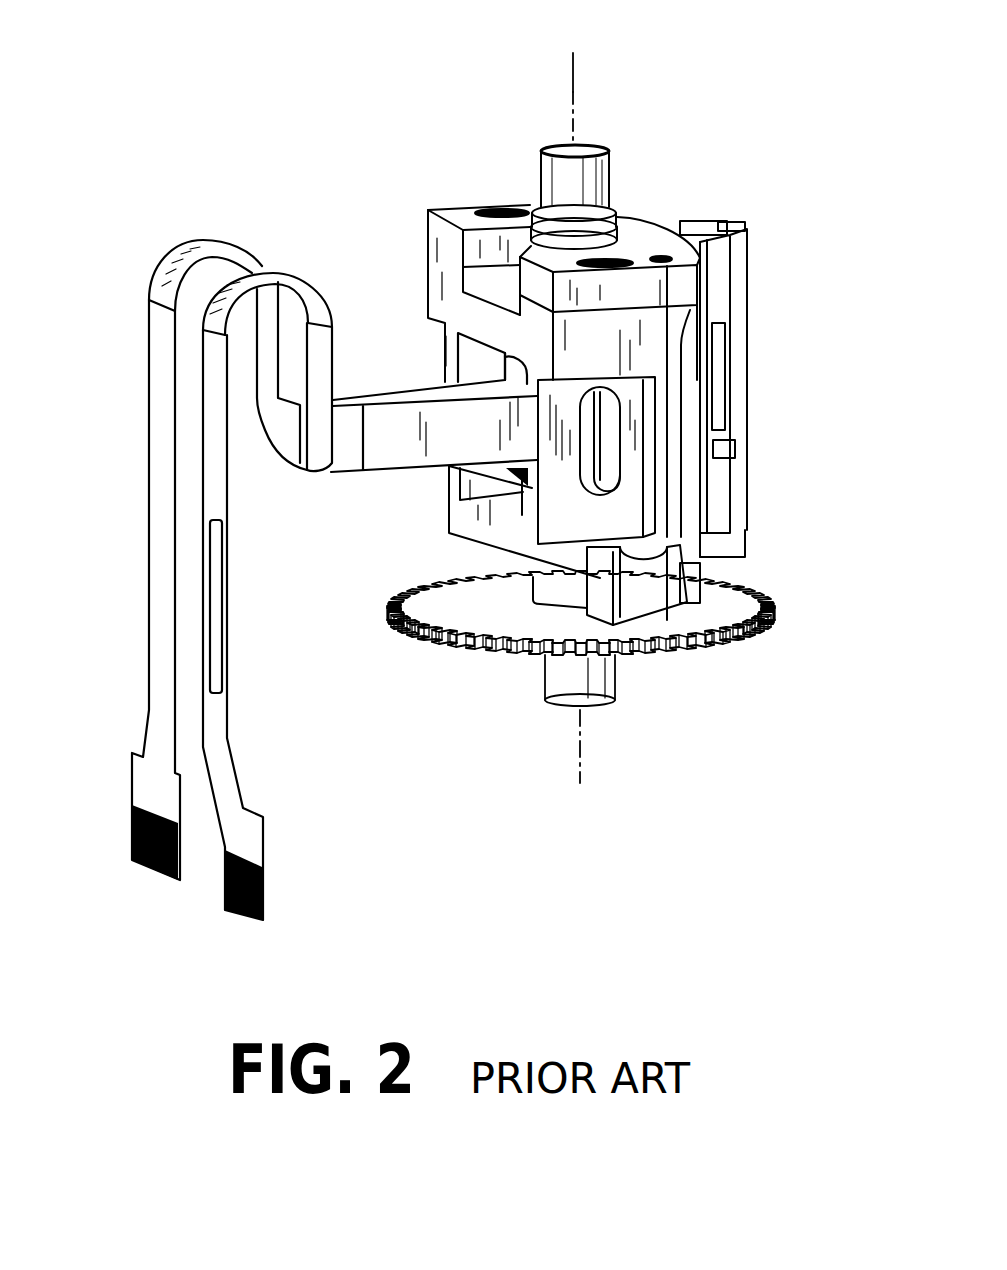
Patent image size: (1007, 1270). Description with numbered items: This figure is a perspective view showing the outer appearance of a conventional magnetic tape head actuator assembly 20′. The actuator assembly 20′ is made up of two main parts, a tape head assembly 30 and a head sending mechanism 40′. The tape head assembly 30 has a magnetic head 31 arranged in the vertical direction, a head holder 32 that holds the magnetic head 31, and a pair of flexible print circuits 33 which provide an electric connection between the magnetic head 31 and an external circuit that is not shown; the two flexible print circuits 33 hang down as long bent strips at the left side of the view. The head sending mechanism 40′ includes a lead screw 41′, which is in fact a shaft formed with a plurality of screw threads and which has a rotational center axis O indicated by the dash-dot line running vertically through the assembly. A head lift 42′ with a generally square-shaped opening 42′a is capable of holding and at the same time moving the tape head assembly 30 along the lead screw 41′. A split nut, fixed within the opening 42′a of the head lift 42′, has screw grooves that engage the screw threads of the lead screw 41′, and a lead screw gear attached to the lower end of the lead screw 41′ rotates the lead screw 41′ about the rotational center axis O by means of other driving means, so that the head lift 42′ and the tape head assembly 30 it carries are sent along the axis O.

The magnetic tape head actuator assembly 20′ is at (569, 845).
The tape head assembly 30 is at (474, 153).
The magnetic head 31 is at (720, 268).
The head holder 32 is at (655, 240).
The flexible print circuits 33 is at (152, 410).
The head sending mechanism 40′ is at (720, 658).
The lead screw 41′ is at (587, 183).
The head lift 42′ is at (600, 505).
The opening 42′a is at (475, 365).
The rotational center axis O is at (573, 78).